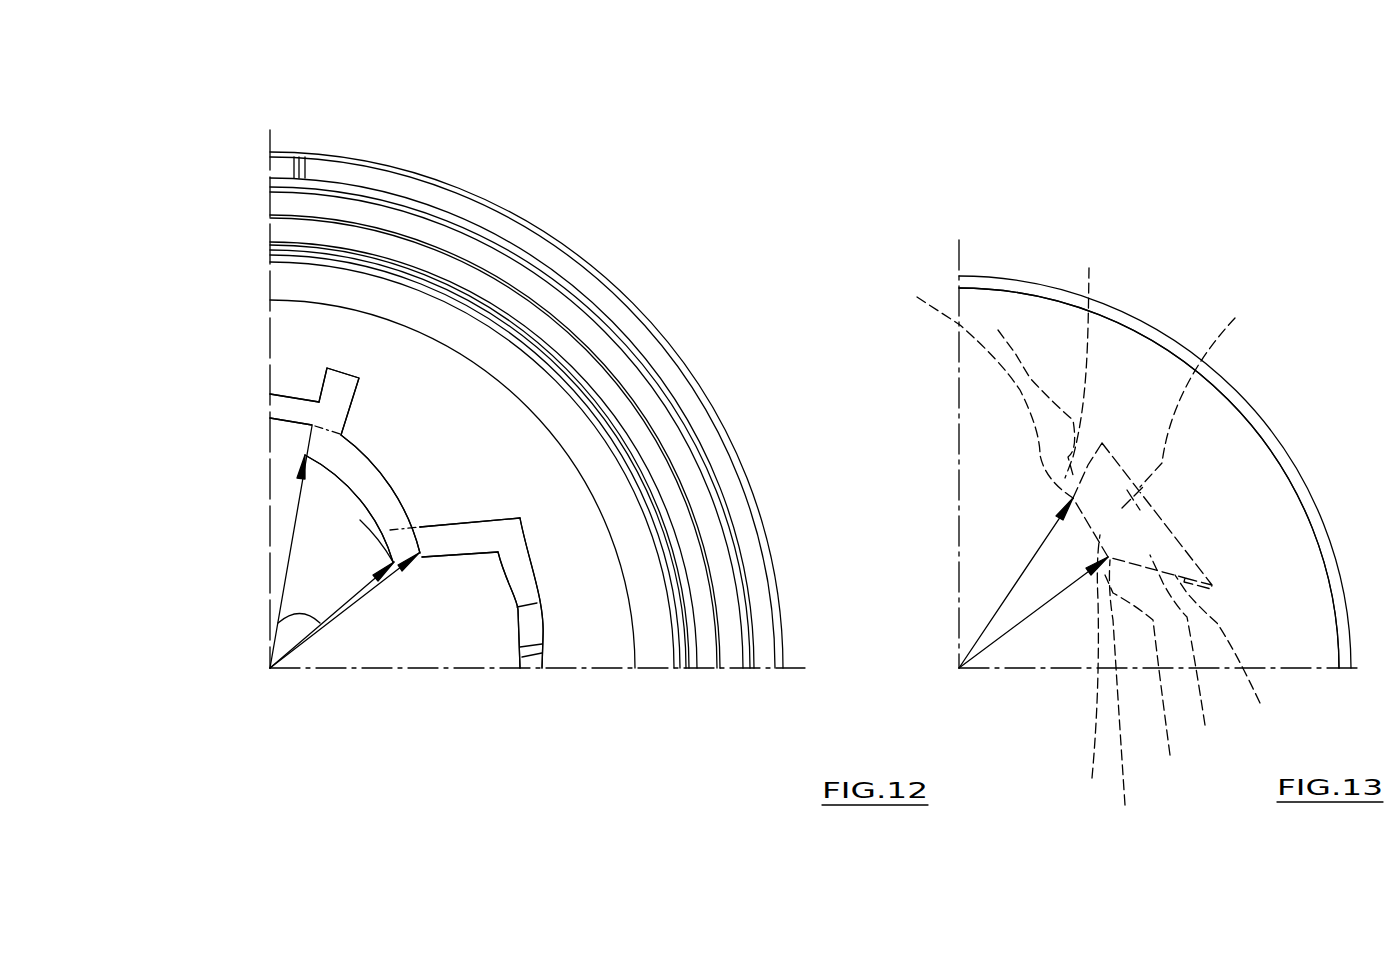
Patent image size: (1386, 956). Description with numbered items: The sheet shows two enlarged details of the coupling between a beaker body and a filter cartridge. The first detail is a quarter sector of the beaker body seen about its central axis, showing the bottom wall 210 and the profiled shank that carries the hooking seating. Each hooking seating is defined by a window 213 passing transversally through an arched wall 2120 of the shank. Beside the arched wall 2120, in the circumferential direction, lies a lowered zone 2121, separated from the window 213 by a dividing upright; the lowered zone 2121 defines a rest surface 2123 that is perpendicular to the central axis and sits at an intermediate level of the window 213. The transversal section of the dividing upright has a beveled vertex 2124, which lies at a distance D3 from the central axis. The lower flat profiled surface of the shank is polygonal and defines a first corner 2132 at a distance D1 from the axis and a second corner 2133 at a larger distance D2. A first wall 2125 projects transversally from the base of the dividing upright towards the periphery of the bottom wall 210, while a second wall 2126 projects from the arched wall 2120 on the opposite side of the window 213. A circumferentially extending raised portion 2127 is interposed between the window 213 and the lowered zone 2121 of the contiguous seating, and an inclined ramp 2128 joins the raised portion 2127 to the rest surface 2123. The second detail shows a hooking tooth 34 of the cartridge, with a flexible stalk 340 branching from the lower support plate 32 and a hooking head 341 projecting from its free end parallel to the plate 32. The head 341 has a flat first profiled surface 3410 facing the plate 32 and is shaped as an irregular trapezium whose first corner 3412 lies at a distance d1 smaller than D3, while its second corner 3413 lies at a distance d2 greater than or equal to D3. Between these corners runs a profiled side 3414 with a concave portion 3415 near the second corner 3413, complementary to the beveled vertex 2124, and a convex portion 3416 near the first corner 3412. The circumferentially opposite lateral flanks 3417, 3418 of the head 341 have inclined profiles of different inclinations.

In FIG. 12, the bottom wall 210 is at (293, 327).
In FIG. 12, the window 213 is at (473, 517).
In FIG. 12, the arched wall 2120 is at (390, 441).
In FIG. 12, the lowered zone 2121 is at (393, 498).
In FIG. 12, the rest surface 2123 is at (513, 552).
In FIG. 12, the beveled vertex 2124 is at (419, 553).
In FIG. 12, the first wall 2125 is at (510, 521).
In FIG. 12, the second wall 2126 is at (342, 372).
In FIG. 12, the raised portion 2127 is at (530, 662).
In FIG. 12, the inclined ramp 2128 is at (530, 606).
In FIG. 12, the first corner 2132 is at (393, 562).
In FIG. 12, the second corner 2133 is at (305, 456).
In FIG. 12, the distance D1 is at (270, 668).
In FIG. 12, the distance D2 is at (283, 597).
In FIG. 12, the distance D3 is at (374, 583).
In FIG. 13, the lower support plate 32 is at (1040, 345).
In FIG. 13, the hooking tooth 34 is at (1057, 403).
In FIG. 13, the stalk 340 is at (1345, 655).
In FIG. 13, the hooking head 341 is at (1095, 492).
In FIG. 13, the first profiled surface 3410 is at (1205, 389).
In FIG. 13, the first corner 3412 is at (1191, 651).
In FIG. 13, the second corner 3413 is at (974, 386).
In FIG. 13, the profiled side 3414 is at (1129, 695).
In FIG. 13, the concave portion 3415 is at (1094, 668).
In FIG. 13, the convex portion 3416 is at (1152, 677).
In FIG. 13, the lateral flank 3417 is at (1231, 651).
In FIG. 13, the lateral flank 3418 is at (1091, 360).
In FIG. 13, the distance d1 is at (1062, 595).
In FIG. 13, the distance d2 is at (1040, 547).